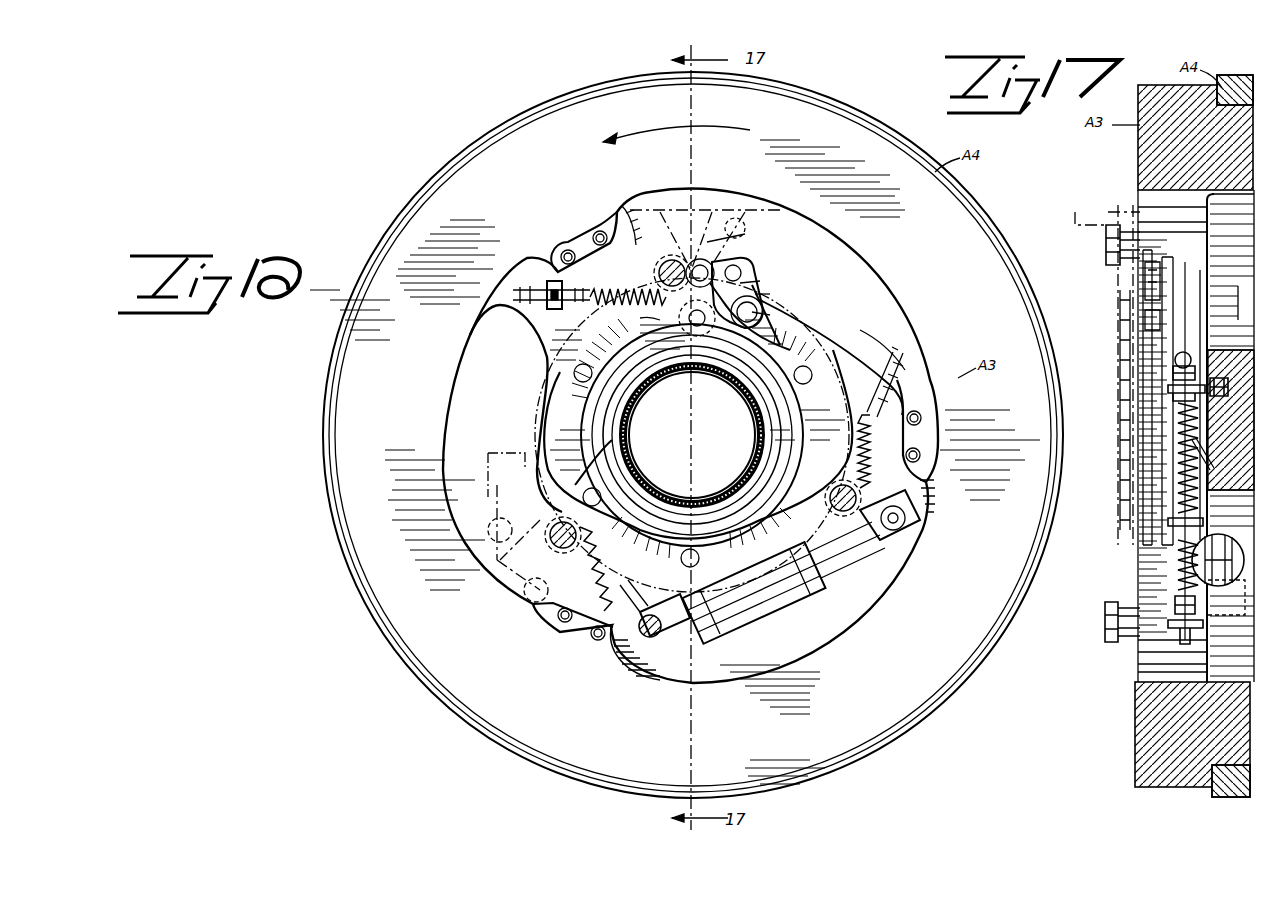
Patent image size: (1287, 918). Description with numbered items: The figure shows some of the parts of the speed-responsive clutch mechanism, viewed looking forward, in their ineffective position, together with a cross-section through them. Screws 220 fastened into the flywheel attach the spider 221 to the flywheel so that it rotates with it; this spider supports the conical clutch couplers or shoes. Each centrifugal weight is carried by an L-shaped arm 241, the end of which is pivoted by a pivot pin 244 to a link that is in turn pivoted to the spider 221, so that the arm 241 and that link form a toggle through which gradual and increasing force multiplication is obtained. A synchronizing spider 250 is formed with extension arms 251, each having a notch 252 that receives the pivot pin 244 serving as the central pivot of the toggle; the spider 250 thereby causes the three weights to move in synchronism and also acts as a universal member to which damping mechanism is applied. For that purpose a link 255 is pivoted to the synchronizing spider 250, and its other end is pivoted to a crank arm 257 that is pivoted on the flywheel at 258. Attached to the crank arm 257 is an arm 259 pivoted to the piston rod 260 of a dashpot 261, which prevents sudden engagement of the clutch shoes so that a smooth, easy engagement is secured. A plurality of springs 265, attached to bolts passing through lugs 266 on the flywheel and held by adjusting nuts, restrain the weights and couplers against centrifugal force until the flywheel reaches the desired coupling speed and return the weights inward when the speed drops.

In FIG. 16, the screws 220 is at (600, 231).
In FIG. 17, the screws 220 is at (1105, 242).
In FIG. 16, the spider 221 is at (555, 285).
In FIG. 17, the spider 221 is at (1118, 306).
In FIG. 16, the L-shaped arm 241 is at (490, 478).
In FIG. 16, the pivot pin 244 is at (740, 275).
In FIG. 16, the synchronizing spider 250 is at (635, 350).
In FIG. 16, the extension arms 251 is at (650, 318).
In FIG. 16, the notch 252 is at (743, 233).
In FIG. 16, the link 255 is at (760, 282).
In FIG. 16, the crank arm 257 is at (770, 294).
In FIG. 16, the pivot 258 is at (770, 315).
In FIG. 16, the arm 259 is at (818, 335).
In FIG. 16, the piston rod 260 is at (822, 583).
In FIG. 17, the piston rod 260 is at (1178, 565).
In FIG. 16, the dashpot 261 is at (732, 630).
In FIG. 17, the dashpot 261 is at (1178, 585).
In FIG. 16, the springs 265 is at (655, 277).
In FIG. 17, the springs 265 is at (1165, 470).
In FIG. 16, the lugs 266 is at (864, 431).
In FIG. 17, the lugs 266 is at (1165, 432).